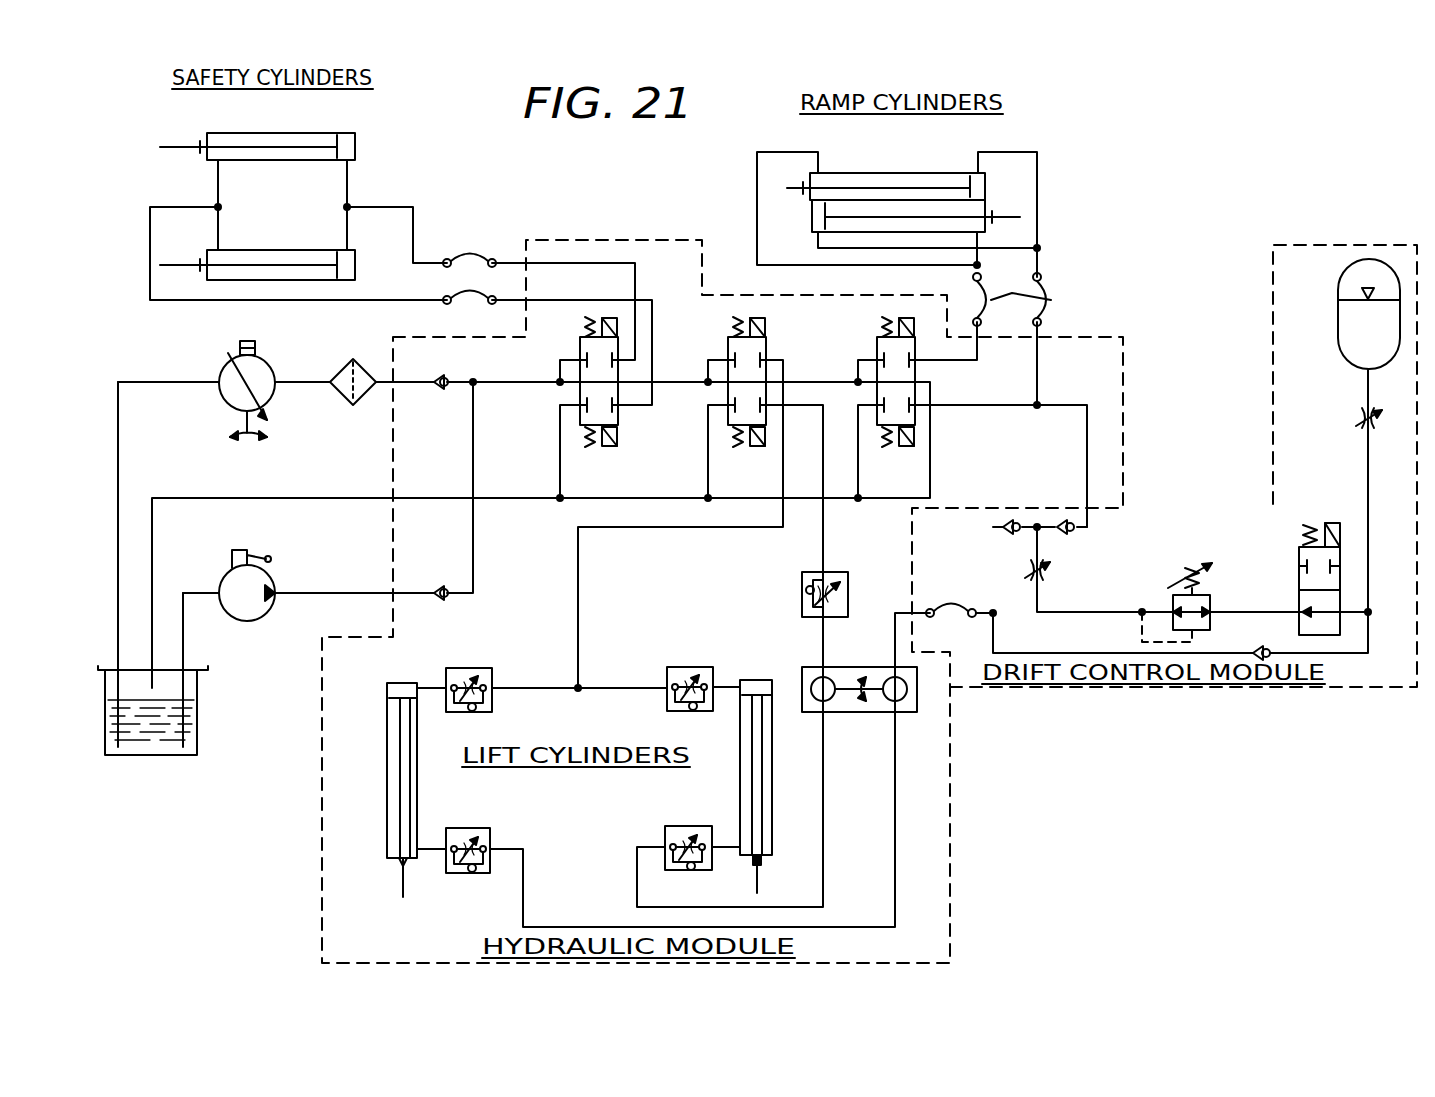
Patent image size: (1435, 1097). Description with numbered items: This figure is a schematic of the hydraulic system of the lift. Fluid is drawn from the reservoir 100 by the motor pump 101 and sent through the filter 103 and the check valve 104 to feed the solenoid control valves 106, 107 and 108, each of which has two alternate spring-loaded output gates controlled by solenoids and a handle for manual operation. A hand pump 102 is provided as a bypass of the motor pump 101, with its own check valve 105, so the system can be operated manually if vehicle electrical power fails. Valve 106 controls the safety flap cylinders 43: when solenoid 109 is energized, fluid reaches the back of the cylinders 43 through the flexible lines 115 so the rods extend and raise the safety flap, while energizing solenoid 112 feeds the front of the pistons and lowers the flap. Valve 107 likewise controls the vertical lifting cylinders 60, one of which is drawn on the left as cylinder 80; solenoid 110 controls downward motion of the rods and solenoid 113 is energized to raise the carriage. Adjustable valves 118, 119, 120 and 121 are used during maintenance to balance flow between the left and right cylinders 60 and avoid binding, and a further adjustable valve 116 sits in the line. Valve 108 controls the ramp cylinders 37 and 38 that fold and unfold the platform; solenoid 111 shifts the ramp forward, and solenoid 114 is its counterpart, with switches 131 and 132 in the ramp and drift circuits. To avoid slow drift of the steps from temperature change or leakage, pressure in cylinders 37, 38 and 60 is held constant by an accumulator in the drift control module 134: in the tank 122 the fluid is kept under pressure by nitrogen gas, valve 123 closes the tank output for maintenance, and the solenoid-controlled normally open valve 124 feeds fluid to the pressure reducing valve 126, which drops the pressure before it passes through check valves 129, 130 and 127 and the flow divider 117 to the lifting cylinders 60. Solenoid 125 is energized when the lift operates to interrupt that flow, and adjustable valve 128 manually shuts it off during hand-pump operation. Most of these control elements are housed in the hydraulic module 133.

The ramp cylinder 37 is at (882, 173).
The ramp cylinder 38 is at (815, 218).
The safety flap cylinders 43 is at (305, 133).
The vertical lifting cylinders 60 is at (772, 780).
The lift cylinder 80 is at (387, 805).
The reservoir 100 is at (197, 720).
The motor pump 101 is at (222, 370).
The hand pump 102 is at (262, 548).
The filter 103 is at (345, 370).
The check valve 104 is at (447, 378).
The check valve 105 is at (448, 588).
The solenoid control valve 106 is at (578, 398).
The solenoid control valve 107 is at (726, 398).
The solenoid control valve 108 is at (877, 398).
The solenoid 109 is at (592, 318).
The solenoid 110 is at (766, 322).
The solenoid 111 is at (913, 330).
The solenoid 112 is at (612, 446).
The solenoid 113 is at (760, 446).
The solenoid 114 is at (895, 446).
The flexible lines 115 is at (460, 288).
The flow control valve 116 is at (802, 600).
The flow divider 117 is at (850, 712).
The adjustable valve 118 is at (700, 826).
The adjustable valve 119 is at (462, 828).
The adjustable valve 120 is at (695, 668).
The adjustable valve 121 is at (472, 668).
The tank 122 is at (1338, 325).
The valve 123 is at (1362, 418).
The solenoid controlled normally open valve 124 is at (1299, 553).
The solenoid 125 is at (1335, 523).
The pressure reducing valve 126 is at (1168, 583).
The check valve 127 is at (1275, 625).
The adjustable valve 128 is at (1042, 575).
The check valve 129 is at (1010, 531).
The check valve 130 is at (1067, 531).
The switch 131 is at (1012, 293).
The switch 132 is at (950, 603).
The hydraulic module housing 133 is at (935, 843).
The drift control module 134 is at (1075, 690).